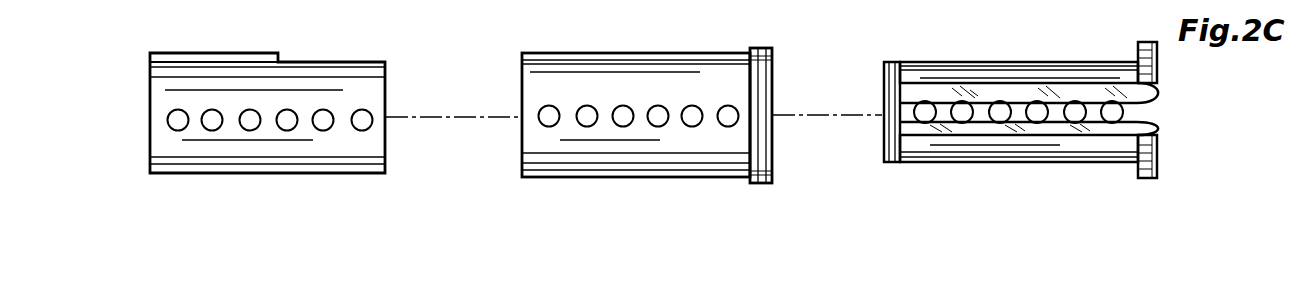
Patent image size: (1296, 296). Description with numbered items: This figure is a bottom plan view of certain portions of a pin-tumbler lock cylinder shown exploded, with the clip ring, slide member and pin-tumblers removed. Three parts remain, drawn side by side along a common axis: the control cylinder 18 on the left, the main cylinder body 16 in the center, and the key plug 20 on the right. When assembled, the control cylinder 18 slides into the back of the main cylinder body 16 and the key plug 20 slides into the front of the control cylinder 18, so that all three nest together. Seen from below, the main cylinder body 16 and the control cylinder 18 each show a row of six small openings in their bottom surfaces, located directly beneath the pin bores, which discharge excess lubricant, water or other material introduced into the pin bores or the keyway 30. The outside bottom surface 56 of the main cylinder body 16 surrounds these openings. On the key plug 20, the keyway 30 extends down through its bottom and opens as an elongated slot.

The main cylinder body 16 is at (655, 60).
The control cylinder 18 is at (312, 77).
The key plug 20 is at (1030, 37).
The keyway 30 is at (1135, 105).
The outside bottom surface 56 is at (647, 128).